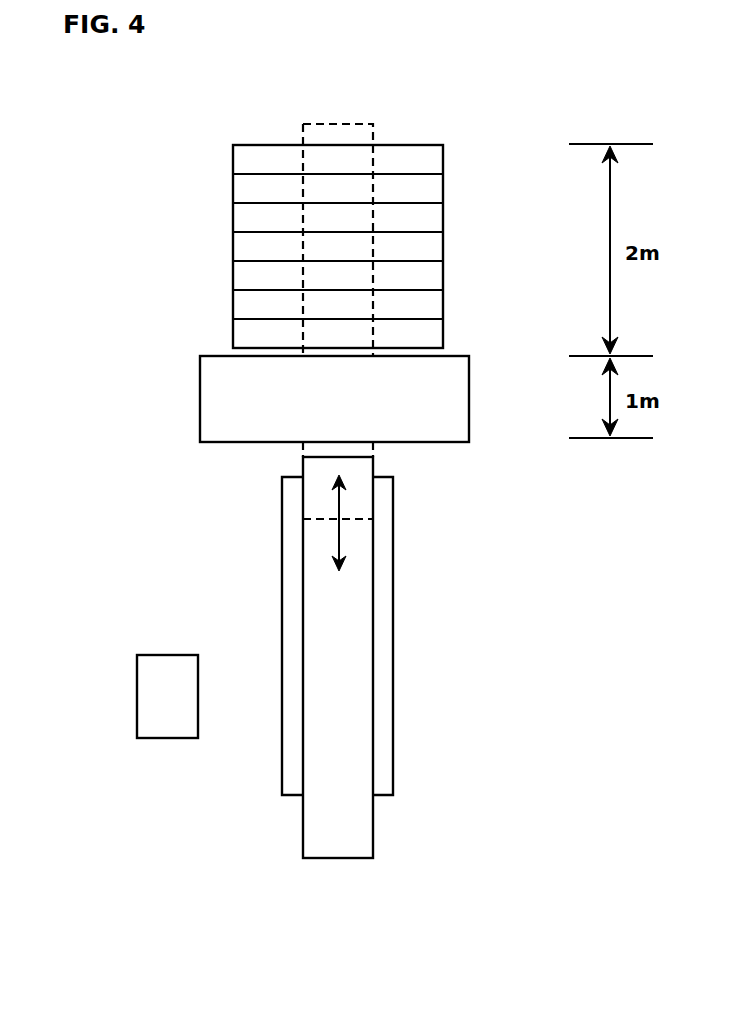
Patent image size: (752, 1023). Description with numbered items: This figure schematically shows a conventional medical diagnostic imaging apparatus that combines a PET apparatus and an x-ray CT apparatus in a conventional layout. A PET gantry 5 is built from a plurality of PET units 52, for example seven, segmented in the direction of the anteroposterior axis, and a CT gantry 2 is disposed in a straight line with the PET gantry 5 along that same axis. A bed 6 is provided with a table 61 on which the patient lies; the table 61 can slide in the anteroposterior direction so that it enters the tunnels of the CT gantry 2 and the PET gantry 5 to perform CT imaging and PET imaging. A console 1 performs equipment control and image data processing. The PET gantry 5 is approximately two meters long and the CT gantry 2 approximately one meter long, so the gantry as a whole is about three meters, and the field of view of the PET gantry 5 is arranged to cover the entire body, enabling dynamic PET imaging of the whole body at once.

The PET gantry 5 is at (209, 218).
The PET unit 52 is at (432, 163).
The CT gantry 2 is at (455, 394).
The bed 6 is at (253, 633).
The table 61 is at (315, 755).
The console 1 is at (160, 705).